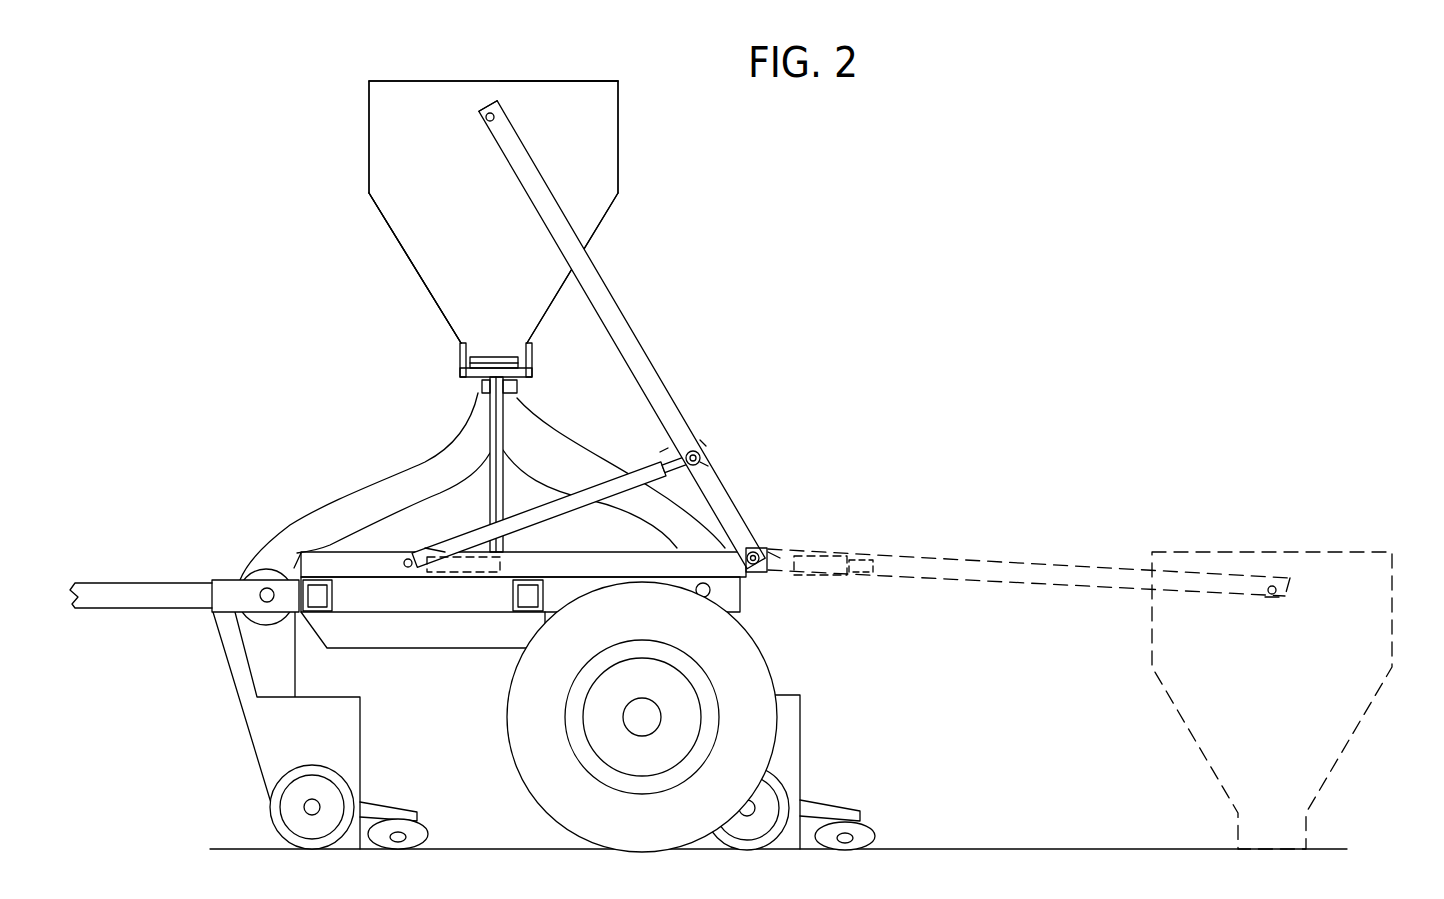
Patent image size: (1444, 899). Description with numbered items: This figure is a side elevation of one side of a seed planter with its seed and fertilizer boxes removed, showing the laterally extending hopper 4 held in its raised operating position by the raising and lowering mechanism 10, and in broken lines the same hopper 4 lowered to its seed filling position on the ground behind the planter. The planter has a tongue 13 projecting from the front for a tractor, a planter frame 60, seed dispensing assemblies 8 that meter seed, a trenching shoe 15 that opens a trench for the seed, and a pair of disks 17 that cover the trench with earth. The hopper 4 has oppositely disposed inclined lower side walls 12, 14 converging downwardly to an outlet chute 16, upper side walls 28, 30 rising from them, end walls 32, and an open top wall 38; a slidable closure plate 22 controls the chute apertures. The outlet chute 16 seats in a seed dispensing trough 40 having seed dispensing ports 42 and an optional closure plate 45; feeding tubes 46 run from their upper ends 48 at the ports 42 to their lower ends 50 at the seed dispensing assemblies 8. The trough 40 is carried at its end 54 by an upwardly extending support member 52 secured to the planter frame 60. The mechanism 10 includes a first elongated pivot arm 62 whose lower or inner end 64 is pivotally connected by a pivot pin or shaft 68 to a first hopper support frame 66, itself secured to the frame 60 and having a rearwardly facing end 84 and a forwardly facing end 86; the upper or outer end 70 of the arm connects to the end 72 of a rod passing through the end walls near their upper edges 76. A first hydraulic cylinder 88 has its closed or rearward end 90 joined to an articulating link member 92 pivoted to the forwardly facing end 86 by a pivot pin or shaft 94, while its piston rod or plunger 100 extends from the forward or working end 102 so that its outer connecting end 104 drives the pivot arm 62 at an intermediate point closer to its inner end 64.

The laterally extending hopper 4 is at (619, 115).
The seed dispensing assembly 8 is at (238, 578).
The raising and lowering mechanism 10 is at (700, 440).
The inclined lower side wall 12 is at (400, 254).
The tongue 13 is at (145, 608).
The inclined lower side wall 14 is at (600, 228).
The trenching shoe 15 is at (248, 748).
The outlet chute 16 is at (460, 350).
The disks 17 is at (420, 808).
The closure plate 22 is at (497, 337).
The upper side wall 28 is at (369, 133).
The upper side wall 30 is at (620, 150).
The end wall 32 is at (390, 207).
The open top wall 38 is at (426, 80).
The seed dispensing trough 40 is at (532, 357).
The seed dispensing port 42 is at (478, 392).
The closure plate 45 is at (532, 376).
The feeding tube 46 is at (352, 485).
The upper end of feeding tube 48 is at (517, 398).
The lower end of feeding tube 50 is at (267, 567).
The support member 52 is at (488, 433).
The end of seed dispensing trough 54 is at (460, 377).
The planter frame 60 is at (450, 648).
The first elongated pivot arm 62 is at (680, 400).
The lower or inner end of pivot arm 64 is at (767, 575).
The first hopper support frame 66 is at (573, 578).
The pivot pin or shaft 68 is at (757, 547).
The upper or outer end of pivot arm 70 is at (498, 107).
The end of pivot and support rod 72 is at (486, 118).
The upper edge of end wall 76 is at (574, 80).
The rearwardly facing end 84 is at (775, 563).
The forwardly facing end 86 is at (297, 565).
The first hydraulic cylinder 88 is at (550, 522).
The closed or rearward end of cylinder 90 is at (433, 556).
The articulating link member 92 is at (432, 574).
The pivot pin or shaft 94 is at (404, 560).
The piston rod or plunger 100 is at (706, 468).
The forward or working end of cylinder 102 is at (660, 452).
The outer connecting end of plunger 104 is at (705, 455).